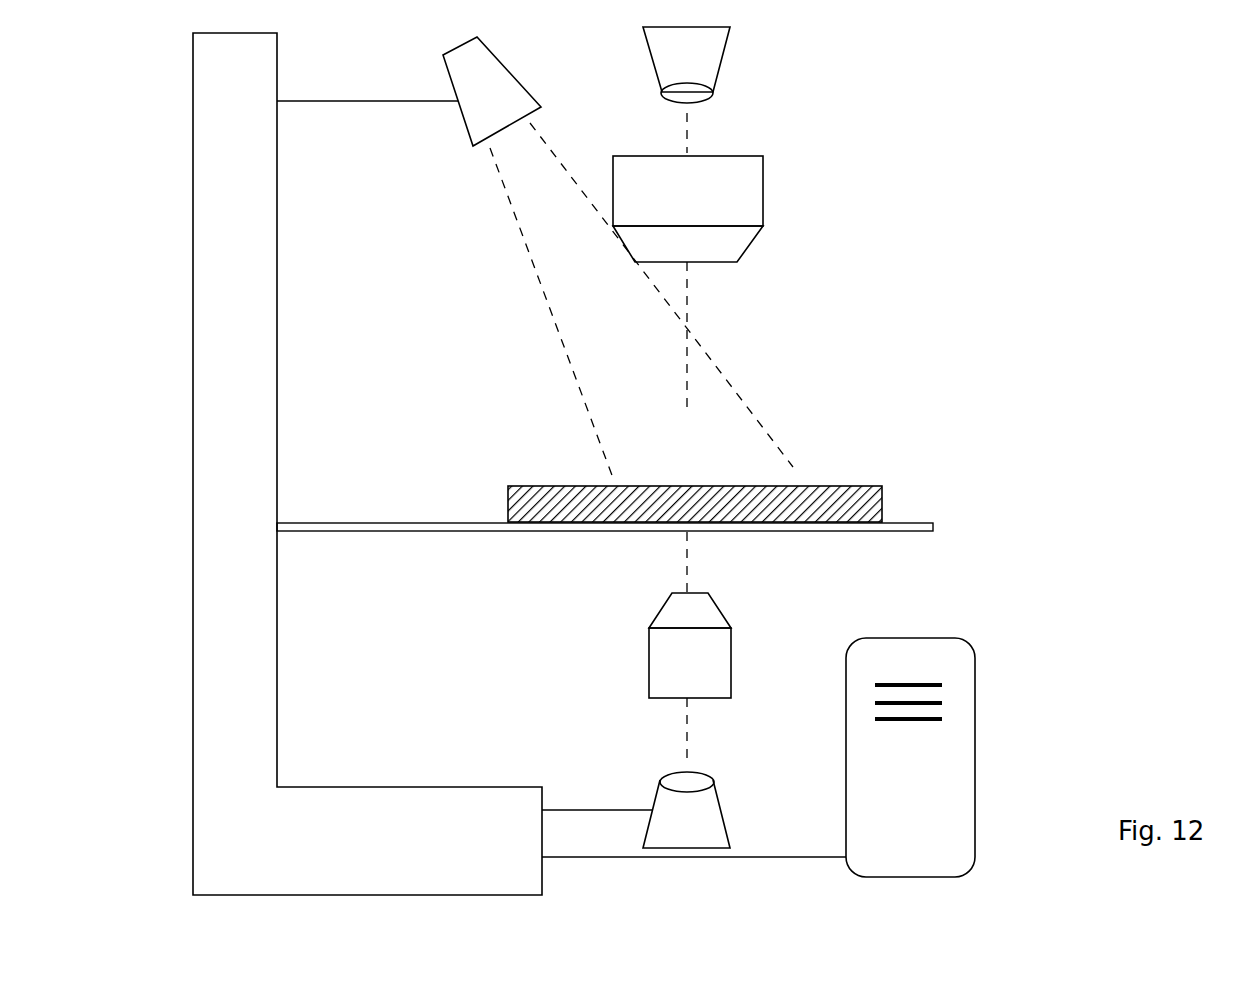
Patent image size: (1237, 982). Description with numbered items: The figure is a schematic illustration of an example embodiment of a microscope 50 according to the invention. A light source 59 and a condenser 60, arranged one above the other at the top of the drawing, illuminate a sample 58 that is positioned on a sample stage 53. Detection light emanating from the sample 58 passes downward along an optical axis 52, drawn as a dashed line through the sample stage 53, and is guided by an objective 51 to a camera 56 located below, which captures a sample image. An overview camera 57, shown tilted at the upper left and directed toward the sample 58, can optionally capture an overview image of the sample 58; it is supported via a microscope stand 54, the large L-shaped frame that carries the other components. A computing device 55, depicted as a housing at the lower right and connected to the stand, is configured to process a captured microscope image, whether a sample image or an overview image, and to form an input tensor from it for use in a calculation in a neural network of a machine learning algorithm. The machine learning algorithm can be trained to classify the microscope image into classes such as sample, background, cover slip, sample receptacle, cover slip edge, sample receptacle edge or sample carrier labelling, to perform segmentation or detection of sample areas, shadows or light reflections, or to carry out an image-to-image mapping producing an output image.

The microscope 50 is at (940, 136).
The objective 51 is at (676, 678).
The optical axis 52 is at (688, 575).
The sample stage 53 is at (937, 523).
The microscope stand 54 is at (224, 460).
The computing device 55 is at (897, 835).
The camera 56 is at (676, 825).
The overview camera 57 is at (473, 108).
The sample 58 is at (890, 491).
The light source 59 is at (674, 70).
The condenser 60 is at (676, 205).